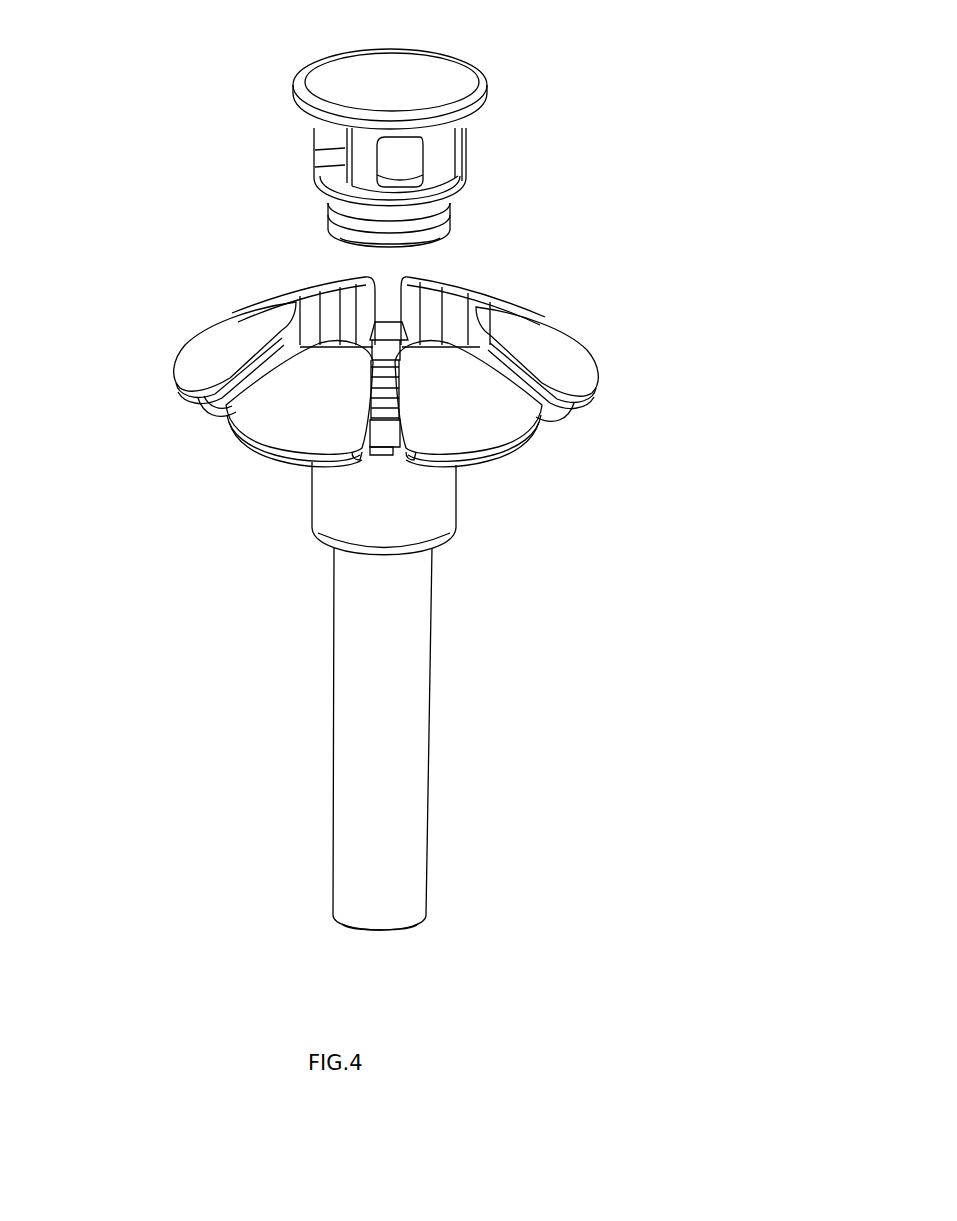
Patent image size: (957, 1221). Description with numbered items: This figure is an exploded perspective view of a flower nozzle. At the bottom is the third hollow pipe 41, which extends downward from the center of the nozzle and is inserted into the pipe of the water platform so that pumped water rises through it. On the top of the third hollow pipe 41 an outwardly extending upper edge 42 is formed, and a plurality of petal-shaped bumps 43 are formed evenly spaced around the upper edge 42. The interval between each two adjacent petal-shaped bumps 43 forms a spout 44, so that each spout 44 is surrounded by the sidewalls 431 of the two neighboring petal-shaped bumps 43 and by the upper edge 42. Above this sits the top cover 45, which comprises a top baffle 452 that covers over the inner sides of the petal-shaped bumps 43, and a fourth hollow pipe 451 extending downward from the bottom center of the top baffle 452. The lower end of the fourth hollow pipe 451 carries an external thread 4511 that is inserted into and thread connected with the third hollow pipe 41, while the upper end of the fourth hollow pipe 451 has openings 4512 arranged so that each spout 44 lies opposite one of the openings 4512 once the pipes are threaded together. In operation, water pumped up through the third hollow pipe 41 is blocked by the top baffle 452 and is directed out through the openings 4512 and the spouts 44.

The third hollow pipe 41 is at (397, 740).
The upper edge 42 is at (382, 440).
The petal-shaped bump 43 is at (227, 352).
The sidewall 431 is at (213, 413).
The spout 44 is at (213, 422).
The top cover 45 is at (303, 154).
The fourth hollow pipe 451 is at (463, 190).
The external thread 4511 is at (430, 220).
The opening 4512 is at (405, 160).
The top baffle 452 is at (422, 67).